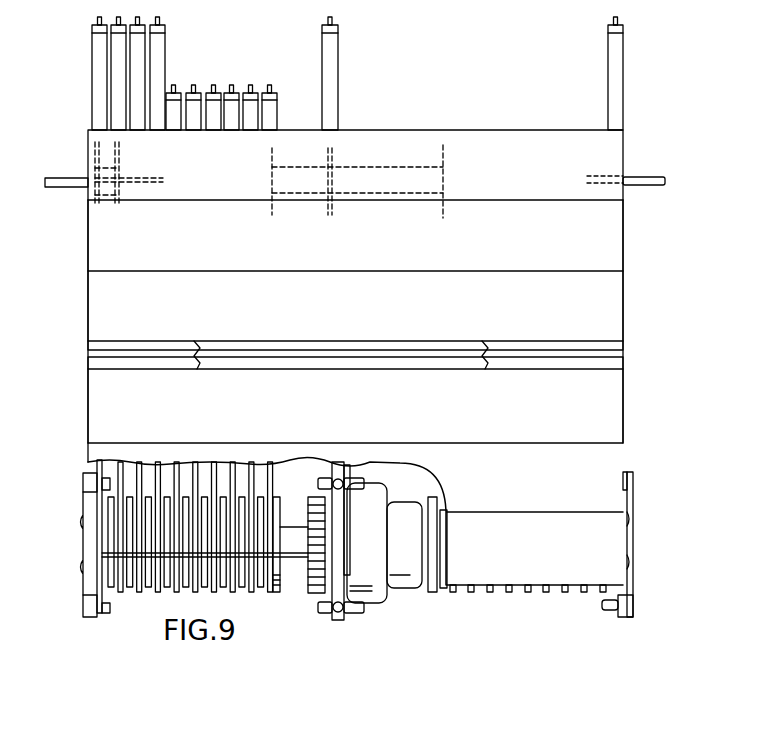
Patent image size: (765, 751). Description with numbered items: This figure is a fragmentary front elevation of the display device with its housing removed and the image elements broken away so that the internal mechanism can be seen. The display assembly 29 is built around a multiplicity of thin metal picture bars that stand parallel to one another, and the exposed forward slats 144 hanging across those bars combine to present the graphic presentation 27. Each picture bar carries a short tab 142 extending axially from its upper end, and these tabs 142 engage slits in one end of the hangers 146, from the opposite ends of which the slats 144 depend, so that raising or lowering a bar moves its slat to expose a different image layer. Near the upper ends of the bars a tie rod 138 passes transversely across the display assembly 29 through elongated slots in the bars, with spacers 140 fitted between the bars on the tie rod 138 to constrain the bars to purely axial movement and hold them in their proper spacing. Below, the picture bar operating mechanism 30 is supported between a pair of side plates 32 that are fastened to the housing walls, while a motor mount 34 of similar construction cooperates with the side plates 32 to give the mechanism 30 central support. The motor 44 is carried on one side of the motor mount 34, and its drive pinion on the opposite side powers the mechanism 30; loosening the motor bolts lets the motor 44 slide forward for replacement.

The graphic presentation 27 is at (407, 255).
The display assembly 29 is at (86, 305).
The picture bar operating mechanism 30 is at (92, 507).
The side plates 32 is at (85, 546).
The motor mount 34 is at (343, 538).
The motor 44 is at (407, 507).
The tie rod 138 is at (60, 178).
The spacers 140 is at (105, 200).
The tab 142 is at (158, 22).
The slats 144 is at (623, 258).
The hangers 146 is at (160, 52).